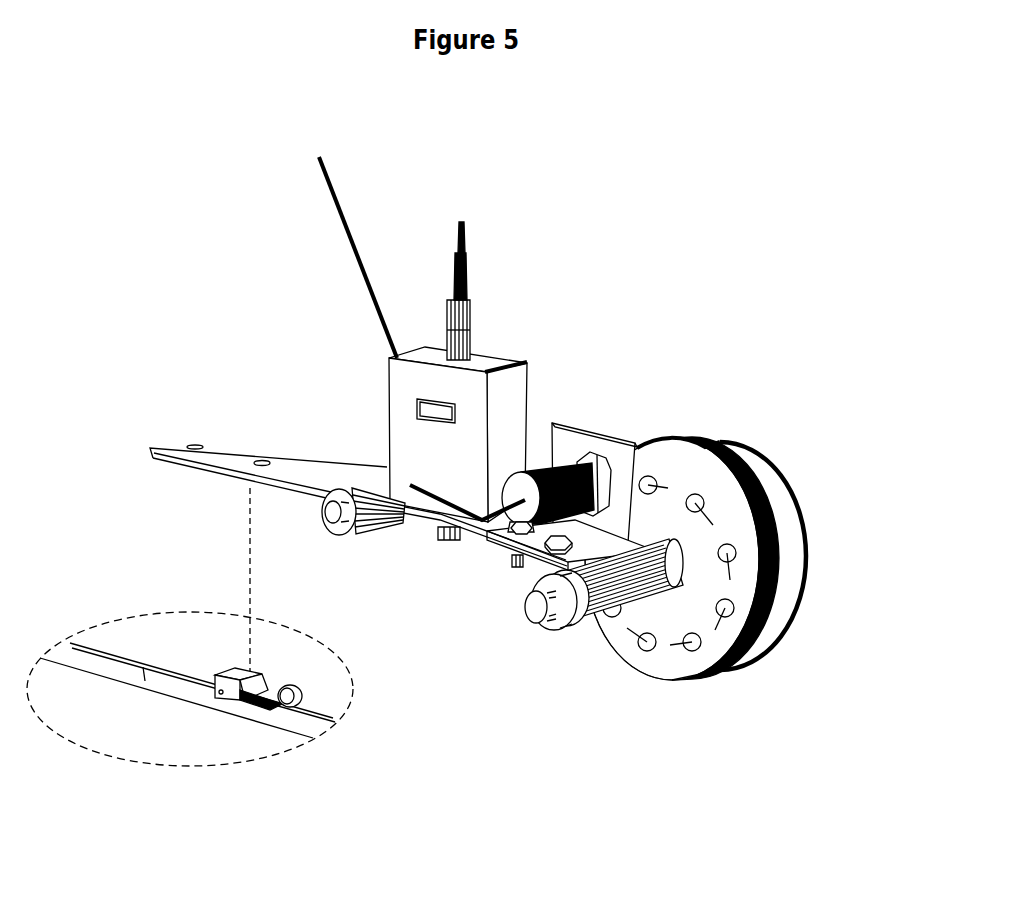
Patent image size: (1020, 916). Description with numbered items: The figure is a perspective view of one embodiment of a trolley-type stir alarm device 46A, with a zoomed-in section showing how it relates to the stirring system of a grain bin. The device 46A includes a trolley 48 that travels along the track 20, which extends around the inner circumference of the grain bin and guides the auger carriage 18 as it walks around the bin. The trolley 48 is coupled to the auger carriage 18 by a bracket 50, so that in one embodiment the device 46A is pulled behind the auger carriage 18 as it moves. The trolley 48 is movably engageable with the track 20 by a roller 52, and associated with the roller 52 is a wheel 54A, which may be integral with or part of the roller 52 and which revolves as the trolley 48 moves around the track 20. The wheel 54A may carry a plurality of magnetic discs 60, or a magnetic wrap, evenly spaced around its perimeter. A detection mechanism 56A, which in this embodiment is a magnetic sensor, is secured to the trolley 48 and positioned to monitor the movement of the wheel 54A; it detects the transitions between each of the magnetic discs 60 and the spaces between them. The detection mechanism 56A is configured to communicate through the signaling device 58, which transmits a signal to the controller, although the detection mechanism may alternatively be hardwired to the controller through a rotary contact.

The trolley-type device 46A is at (378, 125).
The signaling device 58 is at (402, 417).
The bracket 50 is at (215, 450).
The detection mechanism 56A is at (563, 463).
The magnetic discs 60 is at (655, 478).
The wheel 54A is at (728, 527).
The roller 52 is at (787, 587).
The trolley 48 is at (483, 540).
The auger carriage 18 is at (233, 672).
The track 20 is at (128, 670).